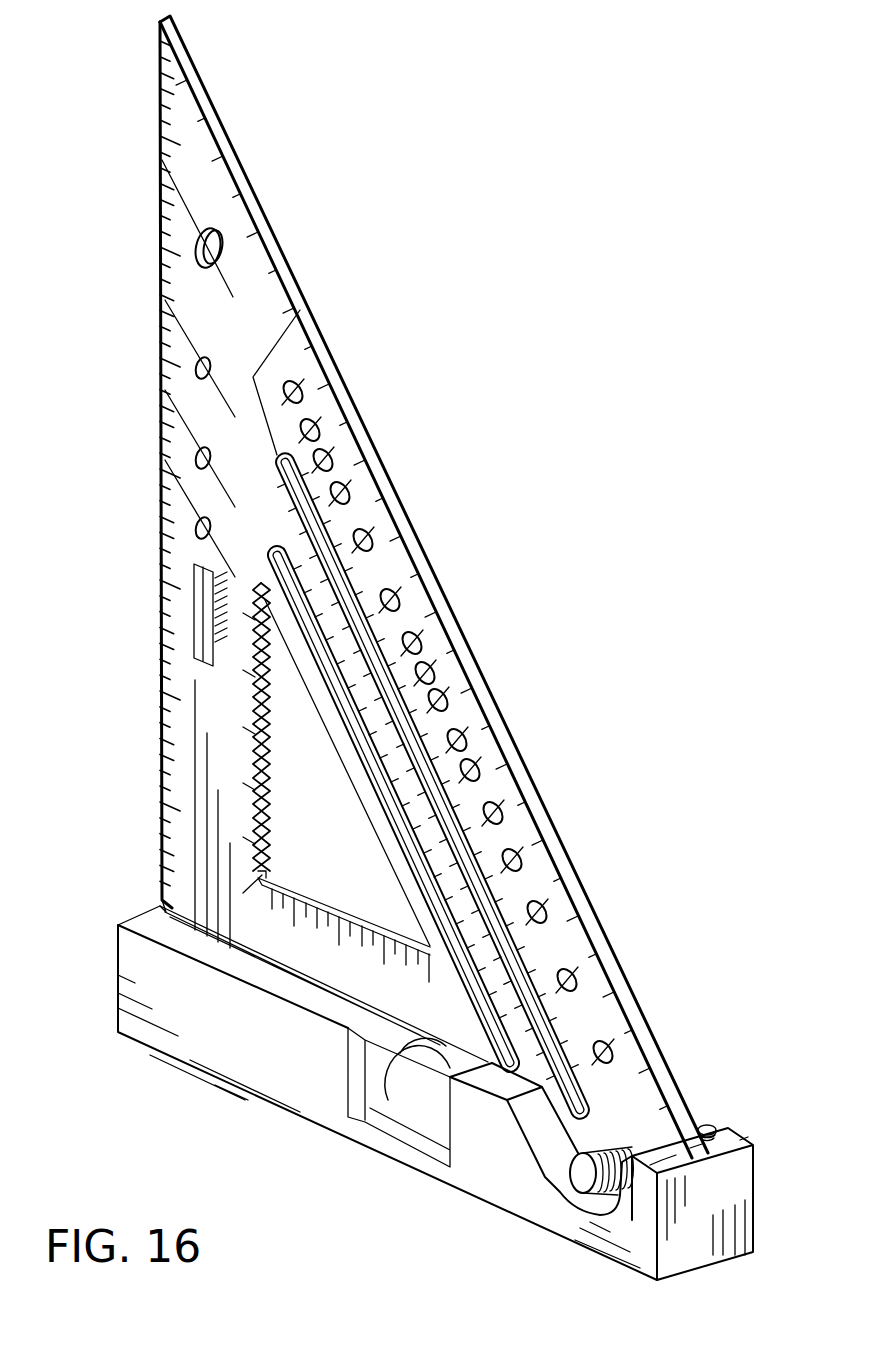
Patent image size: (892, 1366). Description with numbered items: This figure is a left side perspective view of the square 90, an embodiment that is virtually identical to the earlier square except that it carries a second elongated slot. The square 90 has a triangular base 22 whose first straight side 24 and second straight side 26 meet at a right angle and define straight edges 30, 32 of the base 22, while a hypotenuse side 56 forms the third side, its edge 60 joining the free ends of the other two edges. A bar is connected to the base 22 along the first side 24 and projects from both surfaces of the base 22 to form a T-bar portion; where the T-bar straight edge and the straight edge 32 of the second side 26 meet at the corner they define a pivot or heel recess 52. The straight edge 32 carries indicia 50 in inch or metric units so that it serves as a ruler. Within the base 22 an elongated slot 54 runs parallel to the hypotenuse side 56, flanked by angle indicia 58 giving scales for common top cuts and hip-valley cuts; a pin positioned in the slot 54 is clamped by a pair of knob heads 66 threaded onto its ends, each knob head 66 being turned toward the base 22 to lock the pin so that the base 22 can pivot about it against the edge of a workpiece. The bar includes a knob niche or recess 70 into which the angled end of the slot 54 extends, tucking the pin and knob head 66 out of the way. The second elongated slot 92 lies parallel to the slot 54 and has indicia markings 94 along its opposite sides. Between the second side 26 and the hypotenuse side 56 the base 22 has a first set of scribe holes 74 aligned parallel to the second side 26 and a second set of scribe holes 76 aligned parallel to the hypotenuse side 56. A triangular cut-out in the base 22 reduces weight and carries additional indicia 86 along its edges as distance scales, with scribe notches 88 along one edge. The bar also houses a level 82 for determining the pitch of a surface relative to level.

The triangular base 22 is at (213, 100).
The first straight side 24 is at (358, 998).
The second straight side 26 is at (162, 383).
The straight edge 30 is at (292, 970).
The straight edge 32 is at (160, 688).
The indicia 50 is at (165, 302).
The pivot or heel recess 52 is at (160, 907).
The elongated slot 54 is at (307, 298).
The hypotenuse side 56 is at (505, 725).
The angle indicia 58 is at (362, 592).
The edge 60 is at (382, 447).
The knob head 66 is at (707, 1127).
The knob niche or recess 70 is at (547, 1177).
The first set of scribe holes 74 is at (193, 230).
The second set of scribe holes 76 is at (513, 847).
The level 82 is at (413, 1123).
The additional indicia 86 is at (112, 1063).
The scribe notches 88 is at (263, 723).
The square 90 is at (469, 304).
The second elongated slot 92 is at (273, 545).
The indicia markings 94 is at (488, 1012).